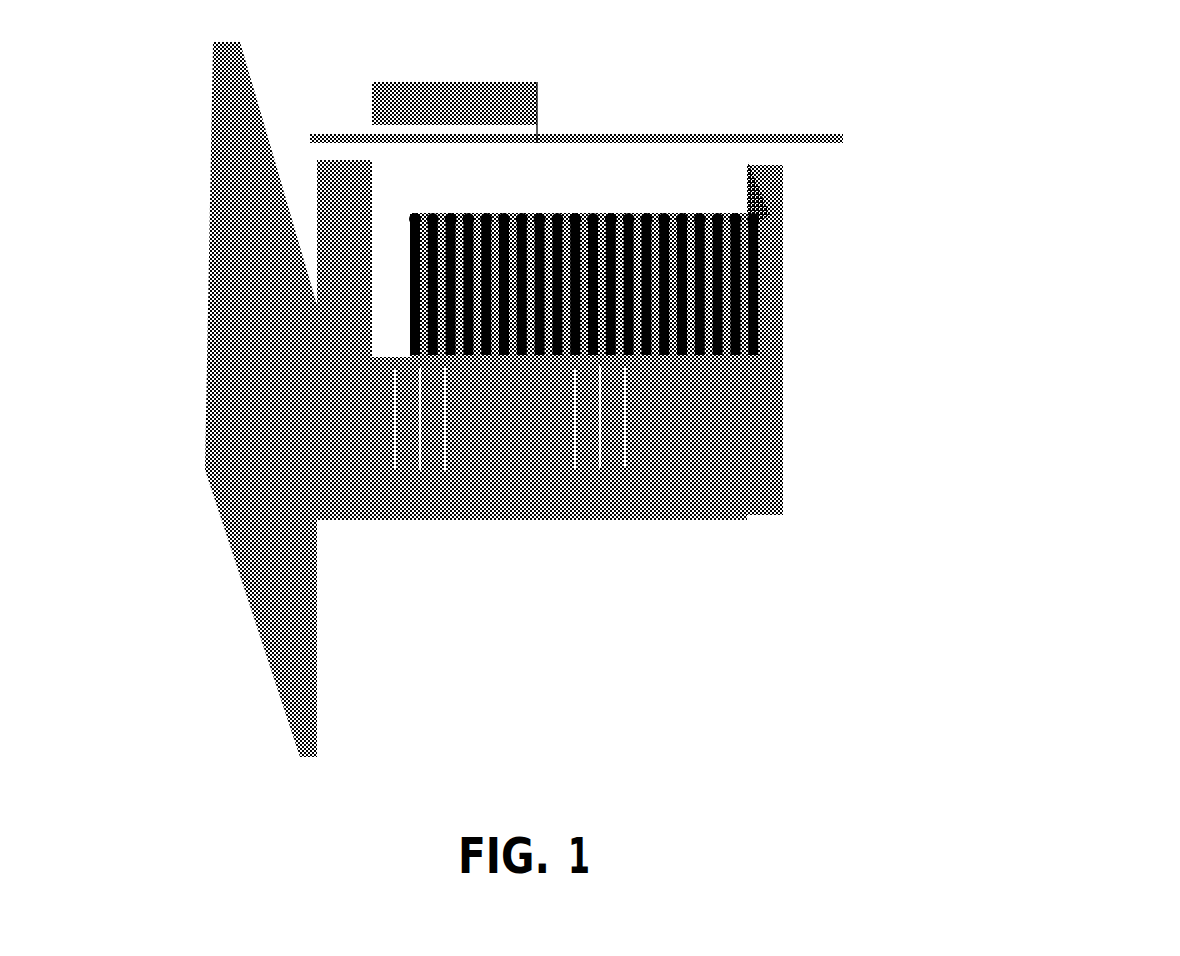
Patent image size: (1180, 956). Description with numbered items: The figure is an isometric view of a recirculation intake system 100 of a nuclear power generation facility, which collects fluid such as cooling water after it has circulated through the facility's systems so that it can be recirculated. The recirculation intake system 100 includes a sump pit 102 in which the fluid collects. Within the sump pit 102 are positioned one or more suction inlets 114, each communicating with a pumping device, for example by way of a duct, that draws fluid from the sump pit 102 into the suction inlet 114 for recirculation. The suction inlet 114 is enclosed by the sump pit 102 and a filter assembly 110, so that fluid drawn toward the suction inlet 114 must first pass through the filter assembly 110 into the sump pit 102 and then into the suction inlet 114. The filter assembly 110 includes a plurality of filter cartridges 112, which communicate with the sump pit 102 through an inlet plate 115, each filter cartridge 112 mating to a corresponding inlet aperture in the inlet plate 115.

The recirculation intake system 100 is at (620, 396).
The sump pit 102 is at (524, 486).
The filter assembly 110 is at (387, 157).
The filter cartridges 112 is at (569, 291).
The suction inlet 114 is at (613, 410).
The inlet plate 115 is at (397, 317).